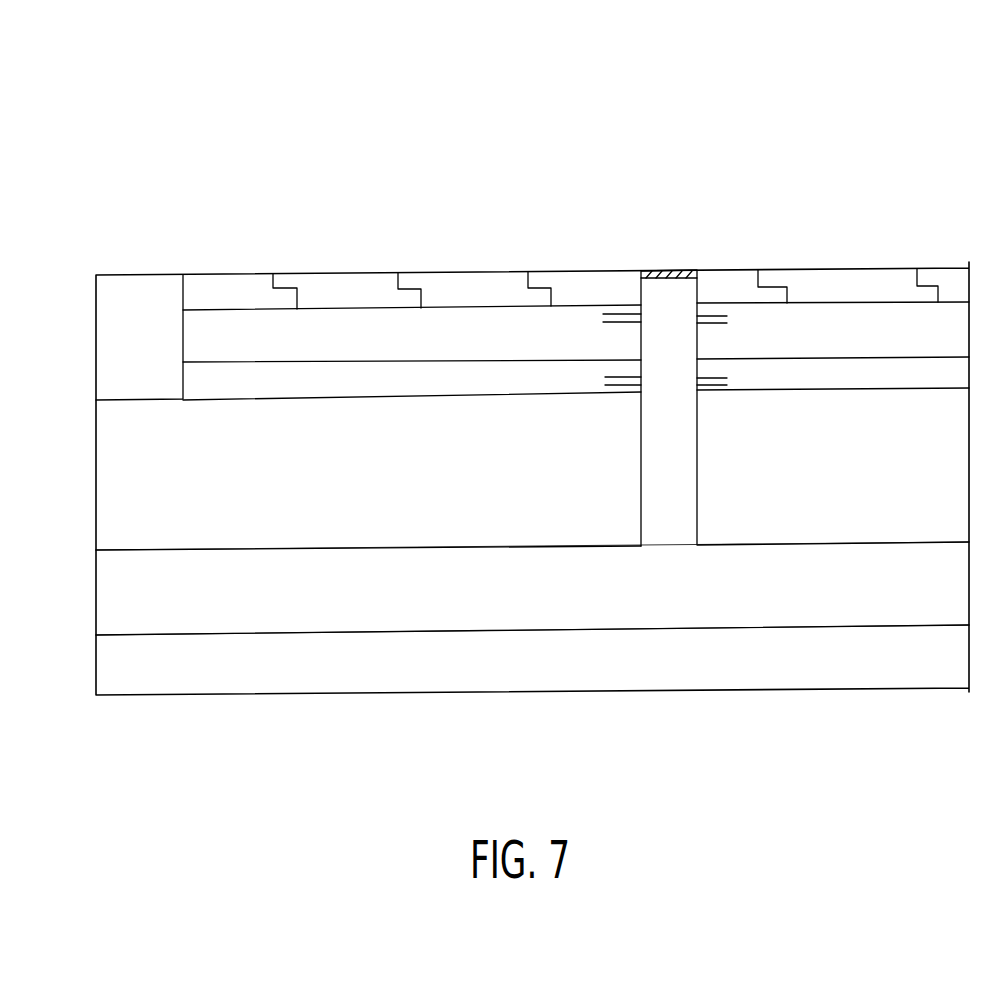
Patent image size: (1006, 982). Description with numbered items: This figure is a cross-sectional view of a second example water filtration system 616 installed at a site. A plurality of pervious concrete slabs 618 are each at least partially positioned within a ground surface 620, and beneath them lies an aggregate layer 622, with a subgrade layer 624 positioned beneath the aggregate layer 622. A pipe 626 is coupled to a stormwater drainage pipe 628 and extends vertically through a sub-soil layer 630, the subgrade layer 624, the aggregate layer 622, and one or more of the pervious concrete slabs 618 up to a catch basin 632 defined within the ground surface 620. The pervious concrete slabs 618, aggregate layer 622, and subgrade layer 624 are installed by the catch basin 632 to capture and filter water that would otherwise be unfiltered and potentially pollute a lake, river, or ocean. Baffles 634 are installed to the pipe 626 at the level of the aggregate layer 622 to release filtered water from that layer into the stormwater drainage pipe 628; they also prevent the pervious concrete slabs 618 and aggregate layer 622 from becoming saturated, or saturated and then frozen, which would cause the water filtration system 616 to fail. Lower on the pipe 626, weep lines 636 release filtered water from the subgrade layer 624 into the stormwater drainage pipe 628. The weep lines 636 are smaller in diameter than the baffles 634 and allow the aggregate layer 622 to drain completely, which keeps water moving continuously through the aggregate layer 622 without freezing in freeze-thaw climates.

The second example water filtration system 616 is at (86, 126).
The pervious concrete slabs 618 is at (240, 297).
The ground surface 620 is at (148, 275).
The aggregate layer 622 is at (395, 353).
The subgrade layer 624 is at (406, 388).
The pipe 626 is at (682, 492).
The stormwater drainage pipe 628 is at (882, 588).
The sub-soil layer 630 is at (415, 456).
The catch basin 632 is at (675, 268).
The baffles 634 is at (617, 328).
The weep lines 636 is at (630, 386).